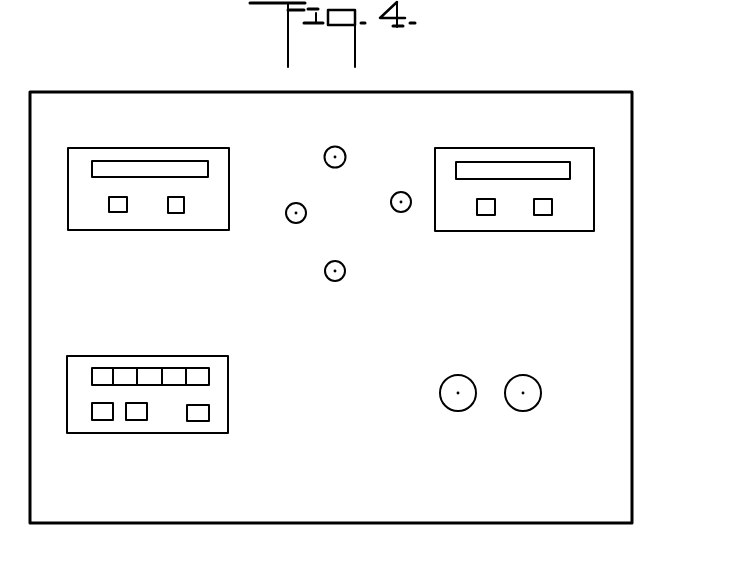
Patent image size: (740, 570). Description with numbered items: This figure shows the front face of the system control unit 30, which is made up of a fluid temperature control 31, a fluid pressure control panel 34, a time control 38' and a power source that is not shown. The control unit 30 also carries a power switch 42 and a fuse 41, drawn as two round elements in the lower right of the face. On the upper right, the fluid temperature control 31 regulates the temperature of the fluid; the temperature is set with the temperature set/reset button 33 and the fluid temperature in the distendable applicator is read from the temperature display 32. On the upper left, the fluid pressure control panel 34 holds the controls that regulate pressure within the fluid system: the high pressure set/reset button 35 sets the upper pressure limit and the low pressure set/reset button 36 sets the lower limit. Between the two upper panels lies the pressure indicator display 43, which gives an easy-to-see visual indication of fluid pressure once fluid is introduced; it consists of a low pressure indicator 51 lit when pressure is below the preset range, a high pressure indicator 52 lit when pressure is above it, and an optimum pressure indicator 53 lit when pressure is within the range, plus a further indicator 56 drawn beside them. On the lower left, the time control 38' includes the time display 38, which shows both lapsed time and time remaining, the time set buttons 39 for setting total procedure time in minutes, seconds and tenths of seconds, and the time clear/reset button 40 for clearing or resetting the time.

The control unit 30 is at (612, 352).
The fluid temperature control 31 is at (583, 143).
The temperature display 32 is at (477, 163).
The temperature set/reset button 33 is at (495, 216).
The fluid pressure control panel 34 is at (221, 146).
The high pressure set/reset button 35 is at (118, 213).
The low pressure set/reset button 36 is at (182, 213).
The time display 38 is at (150, 350).
The time control 38' is at (168, 366).
The time set buttons 39 is at (117, 420).
The time clear/reset button 40 is at (207, 422).
The fuse 41 is at (523, 412).
The power switch 42 is at (453, 413).
The pressure indicator display 43 is at (377, 172).
The low pressure indicator 51 is at (335, 282).
The high pressure indicator 52 is at (325, 154).
The optimum pressure indicator 53 is at (287, 208).
The indicator lamp 56 is at (402, 213).